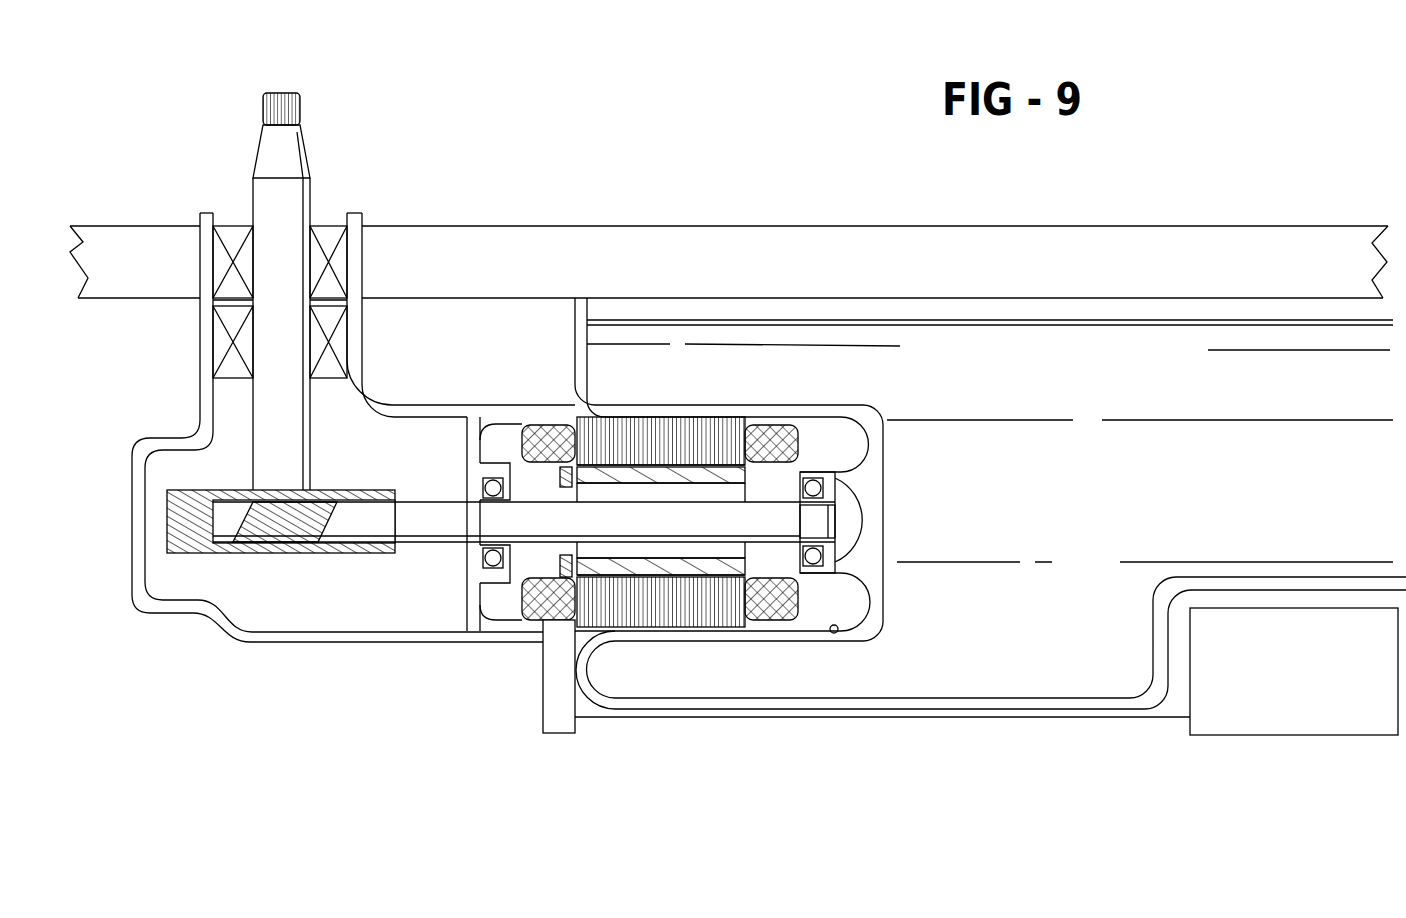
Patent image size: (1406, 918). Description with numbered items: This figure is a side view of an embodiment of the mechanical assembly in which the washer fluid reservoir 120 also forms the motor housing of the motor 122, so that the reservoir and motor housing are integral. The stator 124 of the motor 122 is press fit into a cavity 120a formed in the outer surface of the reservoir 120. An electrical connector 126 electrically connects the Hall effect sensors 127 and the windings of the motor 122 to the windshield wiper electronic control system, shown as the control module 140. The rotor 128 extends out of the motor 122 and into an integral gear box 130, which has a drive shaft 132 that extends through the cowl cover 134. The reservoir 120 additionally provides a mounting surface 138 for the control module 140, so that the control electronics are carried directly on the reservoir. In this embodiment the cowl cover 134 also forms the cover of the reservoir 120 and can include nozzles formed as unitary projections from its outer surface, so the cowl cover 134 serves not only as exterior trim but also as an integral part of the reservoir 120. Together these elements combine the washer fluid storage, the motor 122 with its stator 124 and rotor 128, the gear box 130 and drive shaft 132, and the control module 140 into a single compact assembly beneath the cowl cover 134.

The fluid reservoir 120 is at (1037, 645).
The cavity 120a is at (838, 632).
The motor 122 is at (546, 375).
The stator 124 is at (687, 615).
The electrical connector 126 is at (558, 717).
The Hall effect sensors 127 is at (563, 560).
The rotor 128 is at (425, 528).
The integral gear box 130 is at (300, 668).
The drive shaft 132 is at (287, 152).
The cowl cover 134 is at (488, 253).
The mounting surface 138 is at (1175, 632).
The control module 140 is at (1255, 727).